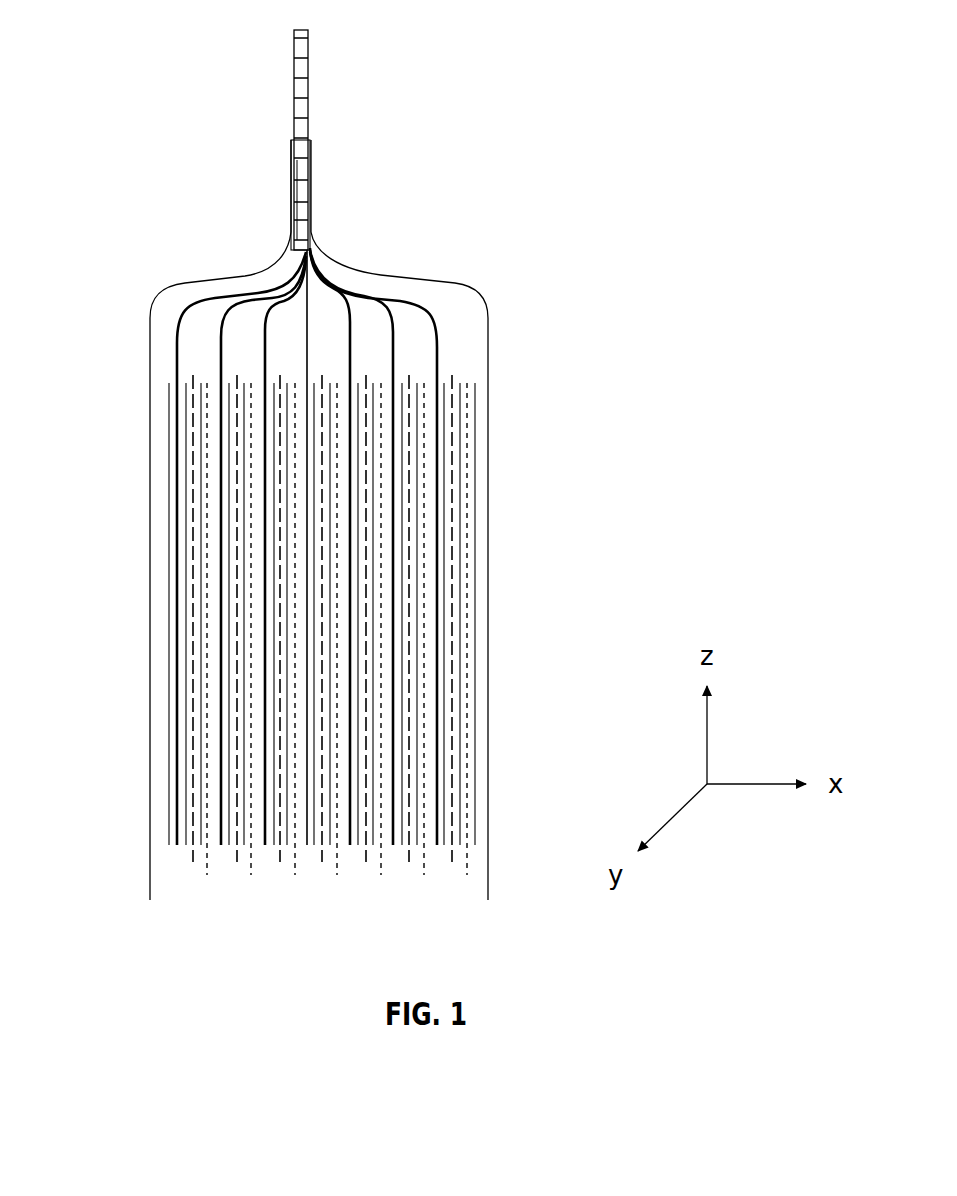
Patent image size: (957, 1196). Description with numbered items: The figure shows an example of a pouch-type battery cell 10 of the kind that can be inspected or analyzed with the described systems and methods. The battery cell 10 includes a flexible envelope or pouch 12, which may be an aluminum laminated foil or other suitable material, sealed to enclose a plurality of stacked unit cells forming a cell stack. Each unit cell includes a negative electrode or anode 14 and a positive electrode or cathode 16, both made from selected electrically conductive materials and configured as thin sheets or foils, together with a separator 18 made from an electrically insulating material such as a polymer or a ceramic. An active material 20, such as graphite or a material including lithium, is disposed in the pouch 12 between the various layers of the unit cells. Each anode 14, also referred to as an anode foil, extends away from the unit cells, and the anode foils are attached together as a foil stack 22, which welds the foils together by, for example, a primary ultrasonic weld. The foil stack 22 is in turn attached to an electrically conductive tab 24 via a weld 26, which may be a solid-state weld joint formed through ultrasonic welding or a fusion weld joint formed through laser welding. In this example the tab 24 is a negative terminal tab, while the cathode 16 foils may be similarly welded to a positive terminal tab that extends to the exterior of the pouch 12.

The battery cell 10 is at (562, 106).
The pouch 12 is at (490, 583).
The anode 14 is at (177, 363).
The cathode 16 is at (207, 475).
The separator 18 is at (197, 427).
The active material 20 is at (258, 400).
The foil stack 22 is at (310, 203).
The tab 24 is at (310, 92).
The weld 26 is at (302, 215).